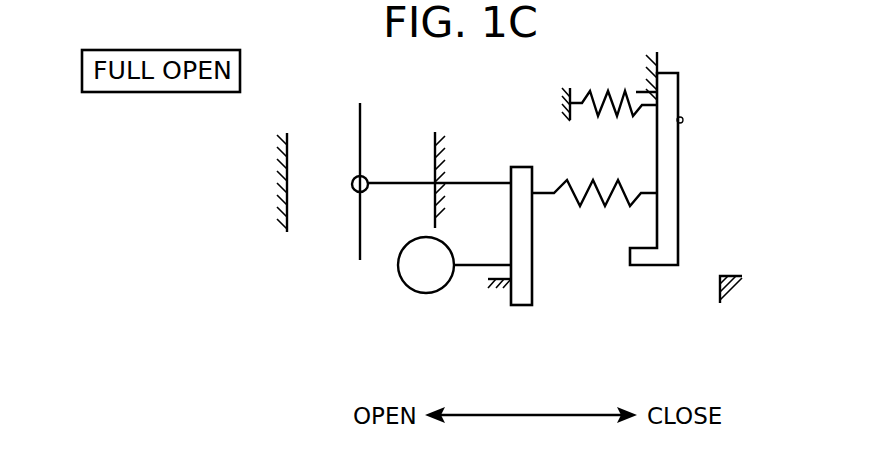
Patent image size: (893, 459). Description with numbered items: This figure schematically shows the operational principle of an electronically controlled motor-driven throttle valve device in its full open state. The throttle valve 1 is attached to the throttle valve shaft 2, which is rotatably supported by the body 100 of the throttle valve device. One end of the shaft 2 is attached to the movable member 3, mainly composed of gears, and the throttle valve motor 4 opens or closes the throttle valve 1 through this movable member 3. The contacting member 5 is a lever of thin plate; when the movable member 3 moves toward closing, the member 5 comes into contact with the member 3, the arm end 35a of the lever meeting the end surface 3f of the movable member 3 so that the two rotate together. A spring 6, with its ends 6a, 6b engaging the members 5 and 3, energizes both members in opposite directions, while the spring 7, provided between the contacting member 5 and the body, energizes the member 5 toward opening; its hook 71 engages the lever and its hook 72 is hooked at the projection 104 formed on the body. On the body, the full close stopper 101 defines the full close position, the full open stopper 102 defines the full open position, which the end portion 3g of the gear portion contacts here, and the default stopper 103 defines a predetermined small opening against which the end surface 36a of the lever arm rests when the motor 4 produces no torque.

The throttle valve 1 is at (359, 248).
The throttle valve shaft 2 is at (352, 183).
The movable member 3 is at (533, 305).
The end surface of the movable member 3f is at (525, 260).
The end portion of the gear portion 3g is at (522, 306).
The throttle valve motor 4 is at (402, 288).
The contacting member 5 is at (679, 88).
The spring 6 is at (596, 205).
The spring end 6a is at (657, 194).
The spring end 6b is at (546, 195).
The spring 7 is at (606, 116).
The hook 71 is at (683, 128).
The hook 72 is at (570, 90).
The valve foot 35a is at (632, 266).
The end surface of the arm 36a is at (661, 60).
The body 100 is at (287, 191).
The full close stopper 101 is at (728, 288).
The full open stopper 102 is at (499, 283).
The default stopper 103 is at (648, 78).
The projection 104 is at (564, 114).